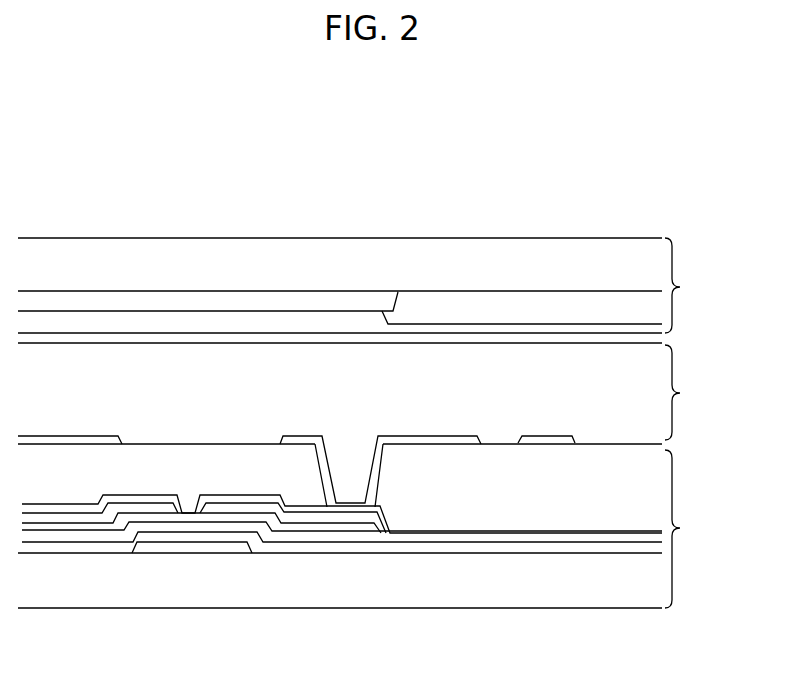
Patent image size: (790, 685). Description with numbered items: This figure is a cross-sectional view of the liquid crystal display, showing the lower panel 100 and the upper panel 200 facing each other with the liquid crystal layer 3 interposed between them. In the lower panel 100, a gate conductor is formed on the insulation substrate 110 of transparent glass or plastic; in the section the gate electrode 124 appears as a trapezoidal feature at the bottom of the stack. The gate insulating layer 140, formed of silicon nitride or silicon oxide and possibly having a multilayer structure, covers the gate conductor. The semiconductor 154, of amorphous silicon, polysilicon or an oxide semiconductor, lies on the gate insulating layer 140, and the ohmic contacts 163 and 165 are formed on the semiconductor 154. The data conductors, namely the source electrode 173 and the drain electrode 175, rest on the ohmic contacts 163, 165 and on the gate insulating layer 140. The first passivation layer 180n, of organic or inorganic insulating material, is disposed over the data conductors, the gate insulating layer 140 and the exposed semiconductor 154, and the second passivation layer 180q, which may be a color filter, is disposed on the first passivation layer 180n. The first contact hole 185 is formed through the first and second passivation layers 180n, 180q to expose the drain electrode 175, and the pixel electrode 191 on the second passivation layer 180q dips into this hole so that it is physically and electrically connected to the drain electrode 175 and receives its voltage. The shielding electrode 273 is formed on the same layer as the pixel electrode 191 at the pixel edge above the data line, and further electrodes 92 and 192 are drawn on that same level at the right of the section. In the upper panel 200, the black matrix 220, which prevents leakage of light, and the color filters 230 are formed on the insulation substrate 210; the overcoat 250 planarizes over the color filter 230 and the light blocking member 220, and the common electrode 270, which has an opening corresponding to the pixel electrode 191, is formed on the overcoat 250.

The insulation substrate 110 is at (622, 598).
The gate electrode 124 is at (218, 551).
The gate insulating layer 140 is at (62, 547).
The semiconductor 154 is at (288, 537).
The ohmic contact 163 is at (152, 517).
The ohmic contact 165 is at (318, 530).
The source electrode 173 is at (162, 508).
The drain electrode 175 is at (365, 520).
The first passivation layer 180n is at (484, 538).
The second passivation layer 180q is at (548, 517).
The first contact hole 185 is at (346, 466).
The pixel electrode 191 is at (430, 437).
The shielding electrode 92 is at (517, 433).
The electrode 192 is at (553, 438).
The shielding electrode 273 is at (88, 437).
The lower panel 100 is at (694, 529).
The liquid crystal layer 3 is at (684, 392).
The upper panel 200 is at (694, 285).
The insulation substrate 210 is at (627, 248).
The black matrix 220 is at (252, 302).
The color filter 230 is at (453, 300).
The overcoat 250 is at (303, 323).
The common electrode 270 is at (193, 338).